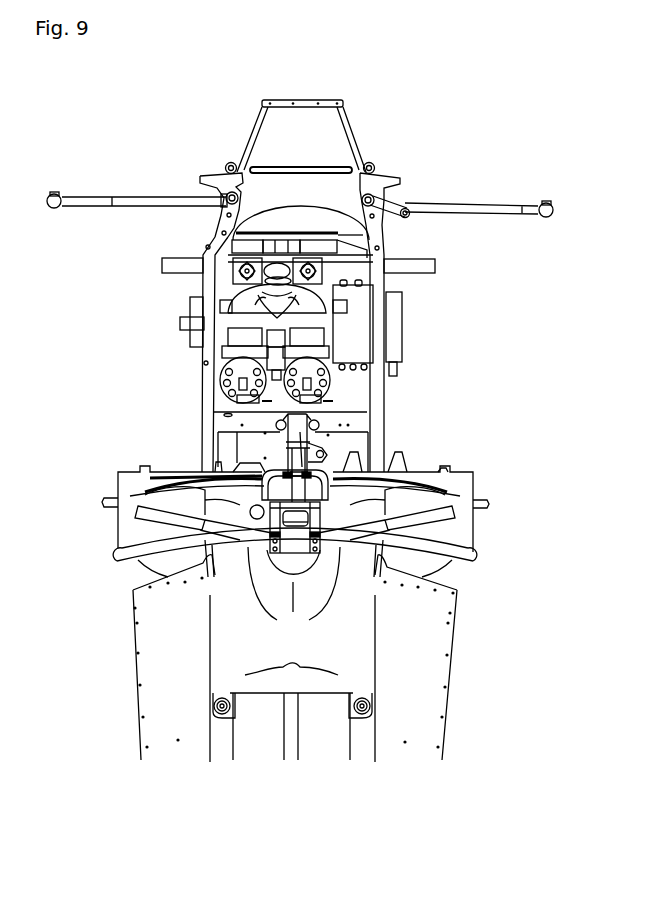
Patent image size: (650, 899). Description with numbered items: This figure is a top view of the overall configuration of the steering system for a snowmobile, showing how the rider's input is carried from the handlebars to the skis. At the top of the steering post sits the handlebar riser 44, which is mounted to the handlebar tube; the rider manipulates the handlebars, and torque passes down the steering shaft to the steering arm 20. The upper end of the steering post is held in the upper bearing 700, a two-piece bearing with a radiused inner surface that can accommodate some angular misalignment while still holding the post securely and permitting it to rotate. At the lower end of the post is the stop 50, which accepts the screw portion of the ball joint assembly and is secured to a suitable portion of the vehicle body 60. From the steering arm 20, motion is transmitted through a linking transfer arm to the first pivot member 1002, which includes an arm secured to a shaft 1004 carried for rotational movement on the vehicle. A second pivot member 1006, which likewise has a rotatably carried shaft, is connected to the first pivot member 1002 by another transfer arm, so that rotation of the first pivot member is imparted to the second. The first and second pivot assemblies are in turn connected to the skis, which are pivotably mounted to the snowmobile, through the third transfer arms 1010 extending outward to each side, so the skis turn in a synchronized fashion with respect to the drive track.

The second pivot member 1006 is at (231, 163).
The shaft 1004 is at (372, 168).
The third transfer arms 1010 is at (162, 196).
The first pivot member 1002 is at (398, 216).
The stop 50 is at (307, 416).
The vehicle body 60 is at (337, 422).
The steering arm 20 is at (310, 447).
The upper bearing 700 is at (267, 474).
The handlebar riser 44 is at (318, 522).